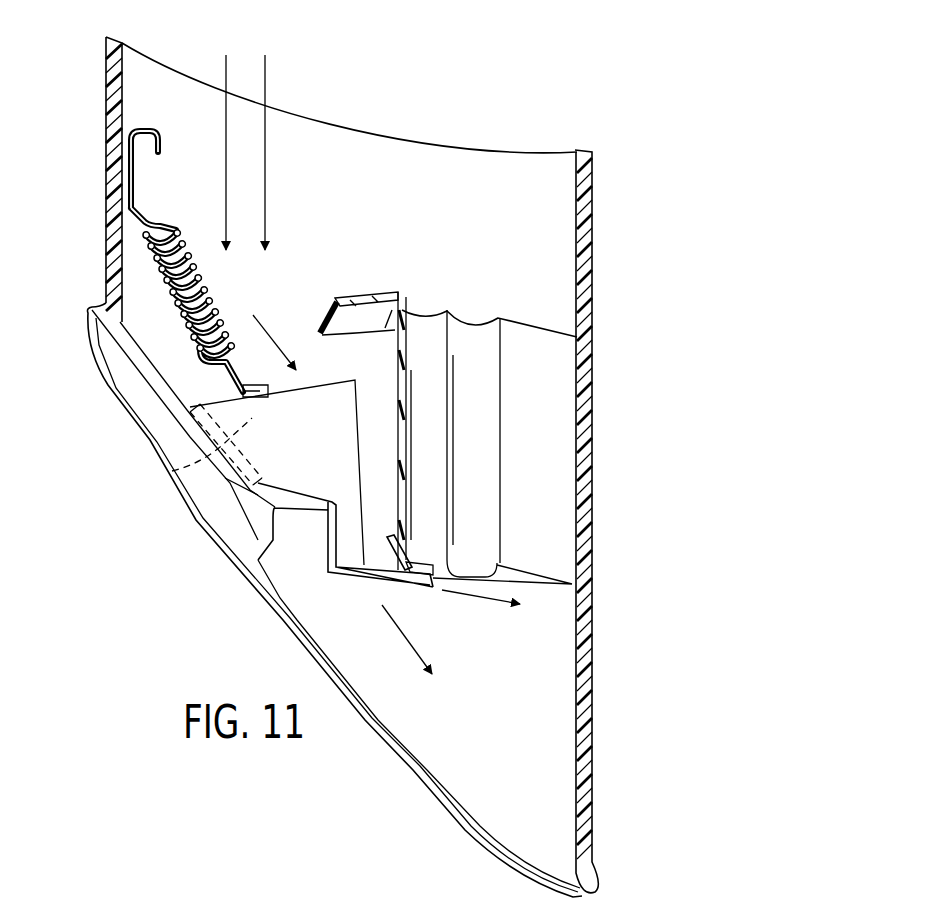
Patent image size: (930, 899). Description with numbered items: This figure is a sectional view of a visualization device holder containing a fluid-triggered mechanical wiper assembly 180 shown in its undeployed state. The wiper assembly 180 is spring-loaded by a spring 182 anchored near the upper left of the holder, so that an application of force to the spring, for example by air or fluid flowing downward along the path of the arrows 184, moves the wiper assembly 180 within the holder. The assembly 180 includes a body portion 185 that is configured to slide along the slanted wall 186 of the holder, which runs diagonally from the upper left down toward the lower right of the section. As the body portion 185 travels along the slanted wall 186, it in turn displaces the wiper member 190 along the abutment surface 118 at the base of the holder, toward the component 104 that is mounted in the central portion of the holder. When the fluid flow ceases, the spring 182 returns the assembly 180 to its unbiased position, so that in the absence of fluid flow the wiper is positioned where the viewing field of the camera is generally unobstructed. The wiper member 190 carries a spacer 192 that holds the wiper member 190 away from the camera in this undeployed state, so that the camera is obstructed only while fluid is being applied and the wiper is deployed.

The retaining clip plate 104 is at (420, 330).
The abutment surface 118 is at (530, 583).
The mechanical wiper assembly 180 is at (172, 471).
The spring 182 is at (165, 284).
The arrows 184 is at (224, 73).
The body portion 185 is at (266, 453).
The slanted wall 186 is at (128, 352).
The wiper member 190 is at (406, 588).
The spacer 192 is at (410, 553).